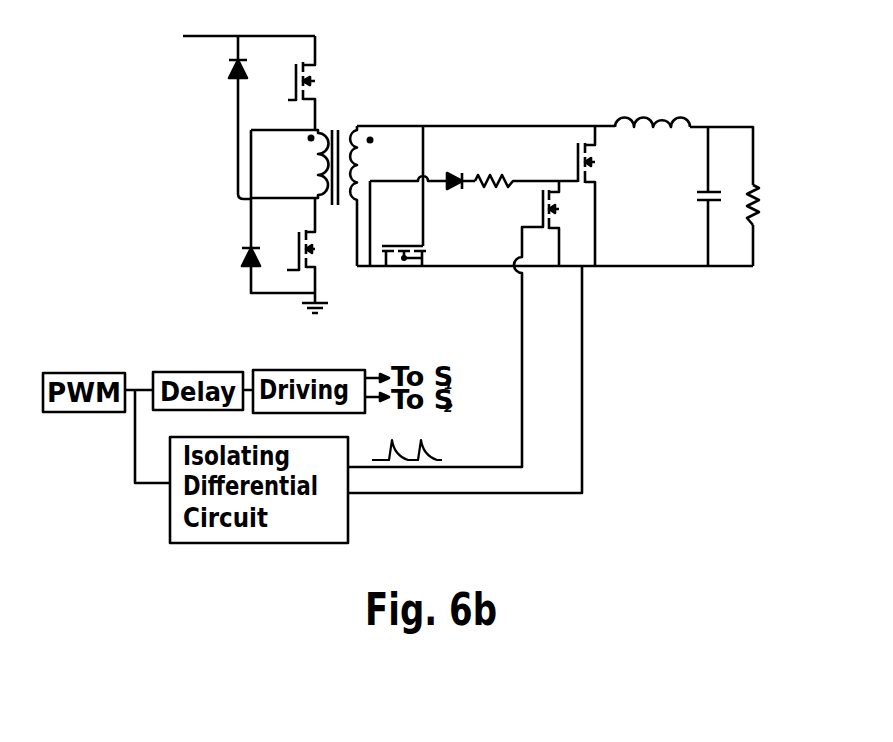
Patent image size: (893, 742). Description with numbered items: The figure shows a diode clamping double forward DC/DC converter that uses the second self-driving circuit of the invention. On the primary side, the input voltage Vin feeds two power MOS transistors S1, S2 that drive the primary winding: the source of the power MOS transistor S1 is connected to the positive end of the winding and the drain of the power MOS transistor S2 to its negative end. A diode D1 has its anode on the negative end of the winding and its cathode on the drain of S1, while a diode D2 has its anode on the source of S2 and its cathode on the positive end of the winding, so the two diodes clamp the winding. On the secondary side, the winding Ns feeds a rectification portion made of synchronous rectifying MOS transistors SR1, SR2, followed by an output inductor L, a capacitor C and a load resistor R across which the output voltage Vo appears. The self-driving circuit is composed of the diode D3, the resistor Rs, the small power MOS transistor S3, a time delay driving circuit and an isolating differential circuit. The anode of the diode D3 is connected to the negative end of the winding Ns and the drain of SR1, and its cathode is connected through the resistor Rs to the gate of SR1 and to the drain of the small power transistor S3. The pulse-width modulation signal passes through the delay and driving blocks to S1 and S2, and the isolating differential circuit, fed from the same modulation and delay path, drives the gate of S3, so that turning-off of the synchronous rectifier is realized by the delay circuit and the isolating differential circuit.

The input voltage Vin is at (249, 21).
The diode D1 is at (223, 117).
The power MOS transistor S1 is at (290, 83).
The diode D2 is at (260, 245).
The power MOS transistor S2 is at (297, 255).
The winding Ns is at (370, 196).
The synchronous rectifying MOS transistor SR1 is at (404, 272).
The diode D3 is at (455, 169).
The resistor Rs is at (526, 168).
The small power MOS transistor S3 is at (453, 324).
The synchronous rectifying MOS transistor SR2 is at (616, 196).
The output inductor L is at (652, 107).
The output voltage Vo is at (757, 105).
The output capacitor C is at (694, 196).
The load resistor R is at (763, 205).